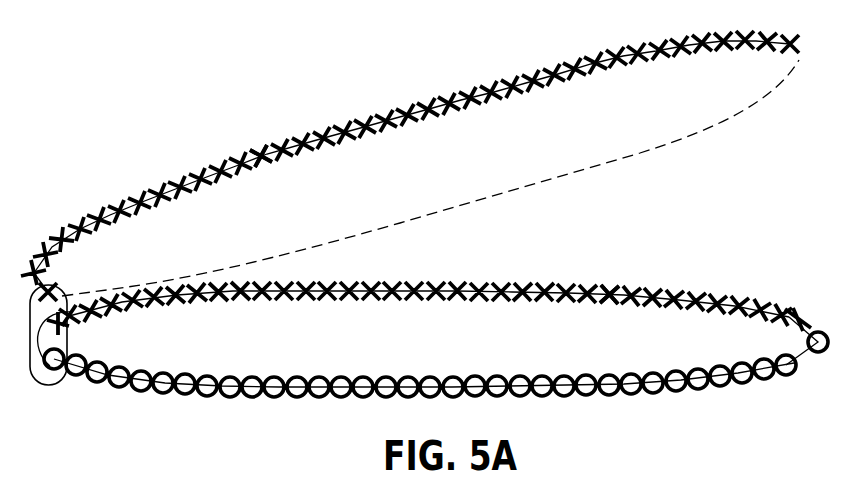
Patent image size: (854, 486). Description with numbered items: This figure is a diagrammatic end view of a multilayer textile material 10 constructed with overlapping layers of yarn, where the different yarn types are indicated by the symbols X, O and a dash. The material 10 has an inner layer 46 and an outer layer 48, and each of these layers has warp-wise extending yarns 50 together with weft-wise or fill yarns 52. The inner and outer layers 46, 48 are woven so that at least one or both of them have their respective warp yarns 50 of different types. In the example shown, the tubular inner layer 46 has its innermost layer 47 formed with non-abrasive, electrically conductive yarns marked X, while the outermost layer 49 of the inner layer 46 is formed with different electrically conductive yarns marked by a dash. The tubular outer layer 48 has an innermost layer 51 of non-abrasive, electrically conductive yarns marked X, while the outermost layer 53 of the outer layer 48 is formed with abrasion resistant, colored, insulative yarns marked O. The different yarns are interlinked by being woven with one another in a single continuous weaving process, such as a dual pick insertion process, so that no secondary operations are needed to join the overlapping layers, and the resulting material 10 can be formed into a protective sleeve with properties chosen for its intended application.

The textile material 10 is at (789, 32).
The inner layer 46 is at (681, 40).
The innermost layer 47 is at (363, 124).
The outer layer 48 is at (787, 303).
The outermost layer 49 is at (677, 141).
The warp-wise extending yarns 50 is at (787, 56).
The innermost layer 51 is at (743, 297).
The weft-wise or fill yarns 52 is at (258, 151).
The outermost layer 53 is at (725, 388).